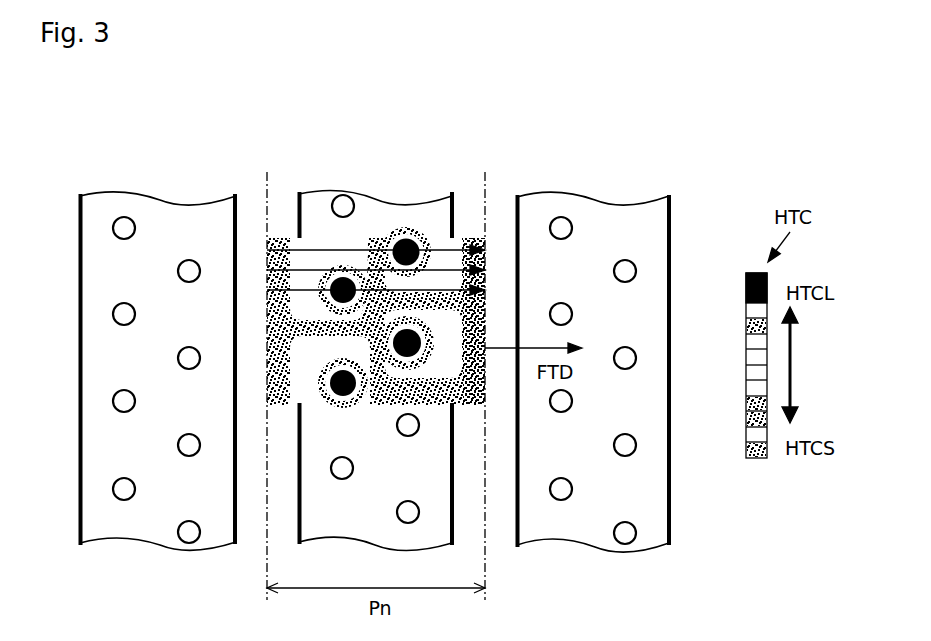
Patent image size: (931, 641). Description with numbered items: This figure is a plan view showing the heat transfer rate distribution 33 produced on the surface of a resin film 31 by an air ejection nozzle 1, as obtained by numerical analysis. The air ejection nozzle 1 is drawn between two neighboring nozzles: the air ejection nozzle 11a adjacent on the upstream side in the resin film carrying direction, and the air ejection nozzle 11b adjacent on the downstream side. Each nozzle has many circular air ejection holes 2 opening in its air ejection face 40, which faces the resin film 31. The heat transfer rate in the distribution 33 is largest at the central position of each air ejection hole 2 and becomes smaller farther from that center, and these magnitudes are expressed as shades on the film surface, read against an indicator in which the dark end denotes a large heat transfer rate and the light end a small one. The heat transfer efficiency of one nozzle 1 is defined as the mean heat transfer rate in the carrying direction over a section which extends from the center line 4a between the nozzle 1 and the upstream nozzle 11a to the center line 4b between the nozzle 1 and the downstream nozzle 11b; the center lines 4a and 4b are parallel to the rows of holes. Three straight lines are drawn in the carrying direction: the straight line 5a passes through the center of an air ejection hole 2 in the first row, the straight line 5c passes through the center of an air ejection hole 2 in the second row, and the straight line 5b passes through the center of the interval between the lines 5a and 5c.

The air ejection nozzle 1 is at (377, 368).
The air ejection hole 2 is at (341, 480).
The center line 4a is at (266, 188).
The center line 4b is at (486, 190).
The straight line 5a is at (300, 291).
The straight line 5b is at (342, 273).
The straight line 5c is at (385, 247).
The air ejection nozzle 11a is at (150, 174).
The air ejection nozzle 11b is at (612, 182).
The resin film 31 is at (366, 389).
The heat transfer rate distribution 33 is at (462, 240).
The air ejection face 40 is at (430, 478).